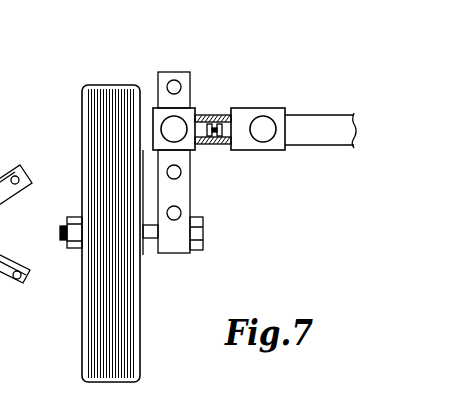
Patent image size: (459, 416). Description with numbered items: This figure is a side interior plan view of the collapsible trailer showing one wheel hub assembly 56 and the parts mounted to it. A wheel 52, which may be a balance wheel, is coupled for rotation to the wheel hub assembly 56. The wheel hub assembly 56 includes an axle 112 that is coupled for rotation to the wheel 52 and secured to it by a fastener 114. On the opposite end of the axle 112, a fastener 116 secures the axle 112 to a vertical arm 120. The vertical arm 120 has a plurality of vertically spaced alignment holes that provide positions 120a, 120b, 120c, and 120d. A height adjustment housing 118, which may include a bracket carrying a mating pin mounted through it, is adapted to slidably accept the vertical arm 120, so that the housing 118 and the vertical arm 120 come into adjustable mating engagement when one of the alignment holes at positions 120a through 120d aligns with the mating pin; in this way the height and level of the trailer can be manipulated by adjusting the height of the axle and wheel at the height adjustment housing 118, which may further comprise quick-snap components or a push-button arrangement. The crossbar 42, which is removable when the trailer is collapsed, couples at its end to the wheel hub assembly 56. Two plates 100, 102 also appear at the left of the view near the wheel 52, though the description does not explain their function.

The wheel 52 is at (140, 354).
The axle 112 is at (152, 238).
The fastener 114 is at (68, 218).
The upper plate 100 is at (17, 167).
The lower plate 102 is at (14, 287).
The vertical arm 120 is at (158, 78).
The alignment hole position 120a is at (174, 80).
The alignment hole position 120b is at (153, 128).
The alignment hole position 120c is at (181, 172).
The alignment hole position 120d is at (181, 213).
The fastener 116 is at (204, 238).
The height adjustment housing 118 is at (194, 108).
The wheel hub assembly 56 is at (222, 83).
The crossbar 42 is at (323, 114).